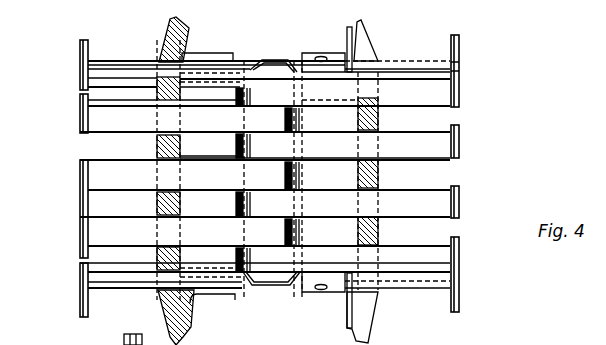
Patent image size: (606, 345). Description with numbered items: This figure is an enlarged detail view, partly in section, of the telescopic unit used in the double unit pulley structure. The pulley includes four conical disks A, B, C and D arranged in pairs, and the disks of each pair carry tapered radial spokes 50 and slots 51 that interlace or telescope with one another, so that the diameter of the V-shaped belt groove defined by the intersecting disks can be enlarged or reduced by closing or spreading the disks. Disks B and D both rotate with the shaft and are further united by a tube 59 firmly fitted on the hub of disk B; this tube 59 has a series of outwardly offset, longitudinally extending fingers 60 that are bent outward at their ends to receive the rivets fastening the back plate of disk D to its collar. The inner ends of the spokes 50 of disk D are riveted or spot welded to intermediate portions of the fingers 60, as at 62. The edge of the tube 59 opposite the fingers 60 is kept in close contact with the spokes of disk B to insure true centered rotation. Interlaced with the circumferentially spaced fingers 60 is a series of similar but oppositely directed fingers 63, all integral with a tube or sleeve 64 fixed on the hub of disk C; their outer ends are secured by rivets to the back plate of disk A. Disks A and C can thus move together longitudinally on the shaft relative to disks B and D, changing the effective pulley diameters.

The tapered radial spokes 50 is at (186, 61).
The slots 51 is at (378, 132).
The tube 59 is at (203, 148).
The fingers 60 is at (442, 198).
The rivets or spot welds 62 is at (320, 57).
The fingers 63 is at (83, 260).
The tube or sleeve 64 is at (378, 227).
The conical disk A is at (224, 57).
The conical disk B is at (163, 32).
The conical disk C is at (351, 32).
The conical disk D is at (369, 38).